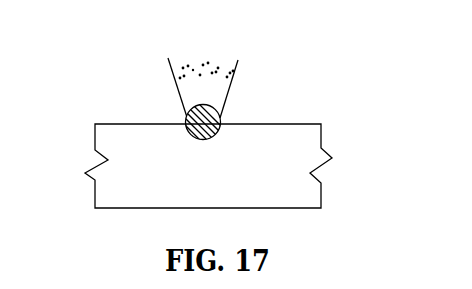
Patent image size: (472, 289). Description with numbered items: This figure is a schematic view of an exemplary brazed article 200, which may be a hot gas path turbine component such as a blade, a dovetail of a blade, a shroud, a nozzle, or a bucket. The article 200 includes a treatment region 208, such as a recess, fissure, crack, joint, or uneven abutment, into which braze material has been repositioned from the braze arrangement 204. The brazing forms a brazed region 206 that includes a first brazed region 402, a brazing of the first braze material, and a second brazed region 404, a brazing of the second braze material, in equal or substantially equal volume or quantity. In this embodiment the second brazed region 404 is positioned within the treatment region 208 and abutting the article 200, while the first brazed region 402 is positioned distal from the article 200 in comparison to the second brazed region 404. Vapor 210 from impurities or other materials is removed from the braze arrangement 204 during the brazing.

The article 200 is at (226, 198).
The braze arrangement 204 is at (312, 85).
The brazed region 206 is at (197, 137).
The treatment region 208 is at (214, 136).
The vapor 210 is at (172, 45).
The first brazed region 402 is at (200, 108).
The second brazed region 404 is at (219, 129).